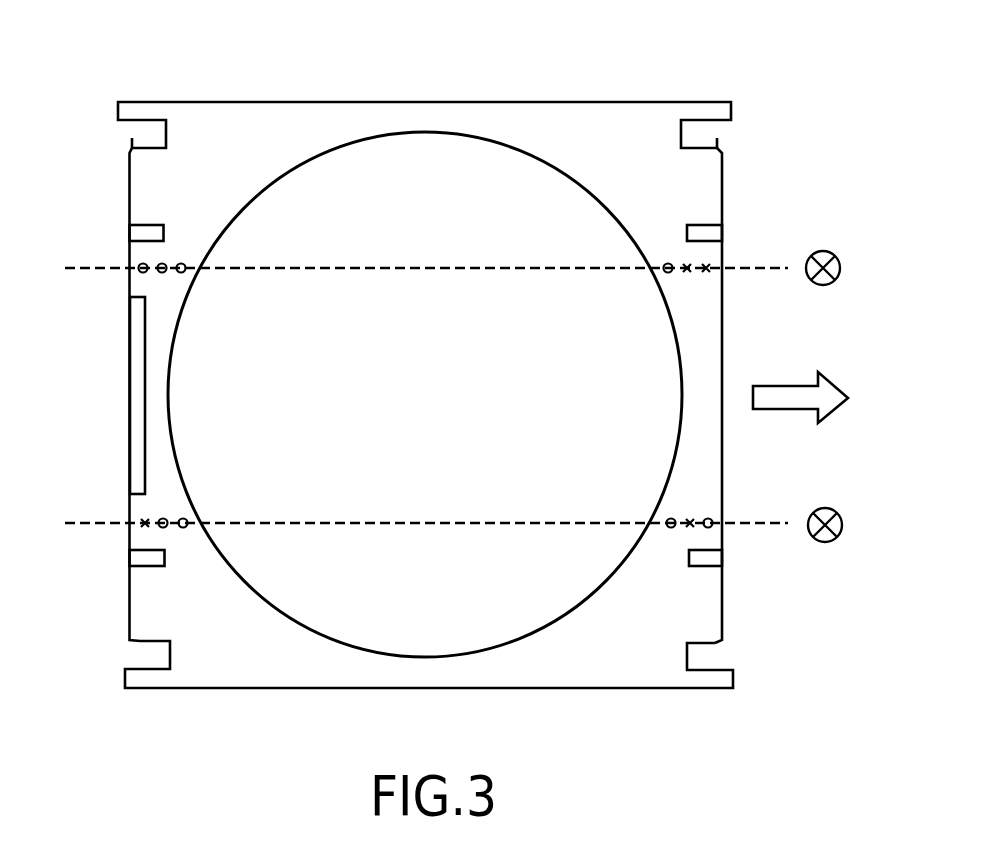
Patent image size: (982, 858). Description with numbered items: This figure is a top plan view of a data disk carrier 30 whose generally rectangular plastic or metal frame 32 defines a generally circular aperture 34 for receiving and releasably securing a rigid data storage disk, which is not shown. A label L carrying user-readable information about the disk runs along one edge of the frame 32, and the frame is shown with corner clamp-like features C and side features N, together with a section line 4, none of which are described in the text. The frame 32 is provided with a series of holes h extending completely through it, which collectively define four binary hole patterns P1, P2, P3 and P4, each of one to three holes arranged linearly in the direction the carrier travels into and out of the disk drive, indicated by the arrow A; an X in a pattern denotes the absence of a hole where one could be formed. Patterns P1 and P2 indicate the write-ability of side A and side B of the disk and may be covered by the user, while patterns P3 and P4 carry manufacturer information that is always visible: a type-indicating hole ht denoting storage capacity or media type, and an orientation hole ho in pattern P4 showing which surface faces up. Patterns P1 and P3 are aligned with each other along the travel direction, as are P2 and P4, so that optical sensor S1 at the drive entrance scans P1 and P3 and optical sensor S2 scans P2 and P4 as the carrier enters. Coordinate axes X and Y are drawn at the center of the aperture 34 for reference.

The carrier 30 is at (506, 84).
The carrier frame 32 is at (575, 690).
The aperture 34 is at (325, 433).
The clamps C is at (150, 135).
The nozzles N is at (134, 233).
The label L is at (131, 390).
The section line 4- 4 is at (65, 523).
The hole pattern P1 is at (168, 250).
The hole pattern P2 is at (172, 540).
The hole pattern P3 is at (679, 250).
The hole pattern P4 is at (683, 540).
The holes h is at (143, 273).
The disk type-indicating hole ht is at (668, 273).
The disk orientation hole ho is at (710, 518).
The absence of a hole X is at (425, 397).
The Y axis Y is at (425, 397).
The optical sensor S1 is at (824, 251).
The optical sensor S2 is at (826, 508).
The arrow A is at (780, 388).